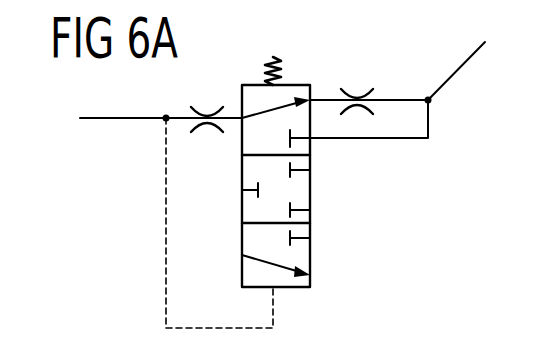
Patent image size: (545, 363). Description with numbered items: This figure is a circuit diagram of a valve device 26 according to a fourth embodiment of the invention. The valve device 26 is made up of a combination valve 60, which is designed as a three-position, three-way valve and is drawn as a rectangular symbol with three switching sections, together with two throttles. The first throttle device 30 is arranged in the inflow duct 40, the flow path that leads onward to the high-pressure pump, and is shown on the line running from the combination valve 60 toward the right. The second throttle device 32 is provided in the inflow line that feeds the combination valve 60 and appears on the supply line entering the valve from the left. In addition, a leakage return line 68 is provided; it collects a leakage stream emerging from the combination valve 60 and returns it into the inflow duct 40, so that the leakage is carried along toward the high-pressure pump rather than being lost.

The valve device 26 is at (131, 202).
The first throttle device 30 is at (357, 94).
The second throttle device 32 is at (207, 128).
The inflow duct 40 is at (460, 72).
The combination valve 60 is at (310, 184).
The leakage return line 68 is at (410, 140).